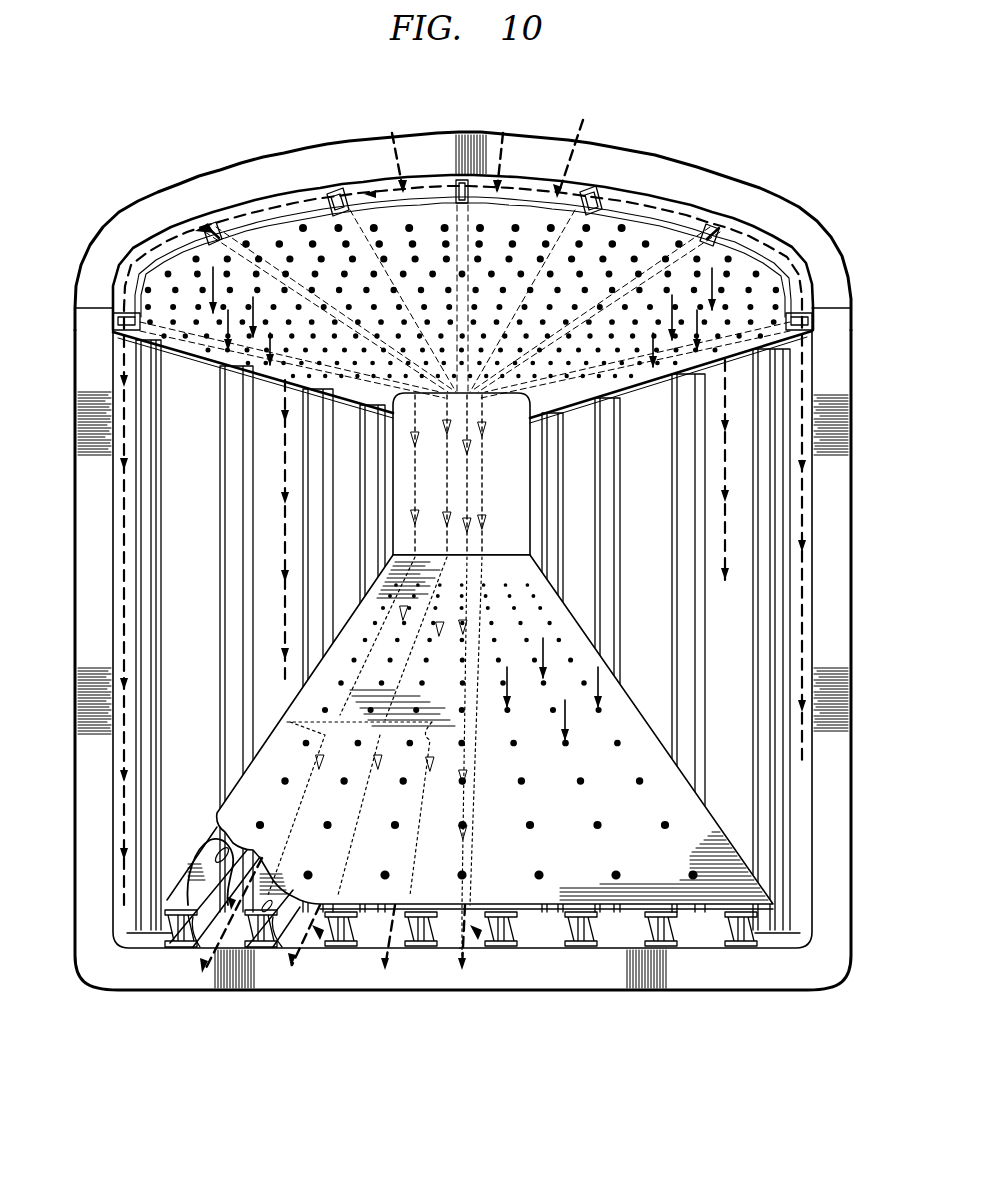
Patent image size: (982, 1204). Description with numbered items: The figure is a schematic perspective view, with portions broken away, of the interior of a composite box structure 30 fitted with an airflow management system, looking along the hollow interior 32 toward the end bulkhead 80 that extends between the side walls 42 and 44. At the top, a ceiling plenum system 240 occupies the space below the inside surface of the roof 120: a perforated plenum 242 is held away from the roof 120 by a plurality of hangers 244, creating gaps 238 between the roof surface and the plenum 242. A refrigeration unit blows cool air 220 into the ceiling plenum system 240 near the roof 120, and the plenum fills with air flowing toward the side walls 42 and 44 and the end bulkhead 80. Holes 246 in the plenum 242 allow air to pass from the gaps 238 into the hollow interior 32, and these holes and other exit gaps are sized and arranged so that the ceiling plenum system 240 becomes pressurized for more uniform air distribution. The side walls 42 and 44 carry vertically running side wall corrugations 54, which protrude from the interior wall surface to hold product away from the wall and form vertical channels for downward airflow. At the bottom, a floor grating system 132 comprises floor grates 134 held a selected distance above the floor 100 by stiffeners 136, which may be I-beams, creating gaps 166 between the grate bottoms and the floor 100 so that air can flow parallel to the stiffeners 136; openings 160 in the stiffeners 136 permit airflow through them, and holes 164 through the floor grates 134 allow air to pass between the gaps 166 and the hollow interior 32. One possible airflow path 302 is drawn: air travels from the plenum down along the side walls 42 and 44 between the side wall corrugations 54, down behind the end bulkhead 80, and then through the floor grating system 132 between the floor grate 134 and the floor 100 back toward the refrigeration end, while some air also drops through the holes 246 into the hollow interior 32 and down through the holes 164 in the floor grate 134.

The composite box structure 30 is at (190, 95).
The hollow interior 32 is at (521, 465).
The side wall 42 is at (90, 640).
The side wall 44 is at (842, 640).
The side wall corrugations 54 is at (165, 670).
The end bulkhead 80 is at (524, 523).
The floor 100 is at (698, 984).
The roof 120 is at (630, 157).
The floor grating system 132 is at (313, 940).
The floor grate 134 is at (537, 910).
The stiffeners 136 is at (415, 948).
The openings 160 is at (217, 915).
The holes 164 is at (527, 823).
The gaps 166 is at (480, 948).
The cool air 220 is at (392, 128).
The gaps 238 is at (237, 222).
The ceiling plenum system 240 is at (685, 206).
The plenum 242 is at (313, 228).
The hangers 244 is at (347, 184).
The holes 246 is at (437, 222).
The airflow path 302 is at (140, 268).